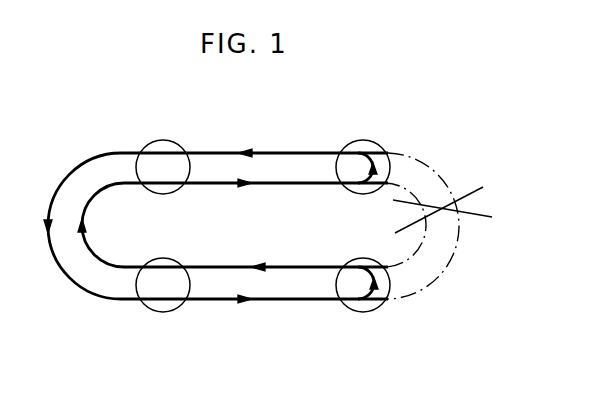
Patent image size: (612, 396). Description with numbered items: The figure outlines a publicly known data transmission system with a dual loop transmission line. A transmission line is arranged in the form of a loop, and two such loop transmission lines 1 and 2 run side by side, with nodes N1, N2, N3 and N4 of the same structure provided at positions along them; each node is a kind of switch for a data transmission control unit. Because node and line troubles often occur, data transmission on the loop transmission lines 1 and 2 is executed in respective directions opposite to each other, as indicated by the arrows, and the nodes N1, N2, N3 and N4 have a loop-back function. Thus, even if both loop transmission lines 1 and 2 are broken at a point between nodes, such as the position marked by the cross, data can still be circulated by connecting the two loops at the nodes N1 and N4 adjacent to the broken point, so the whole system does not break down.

The loop transmission line 1 is at (443, 268).
The loop transmission line 2 is at (428, 233).
The node N1 is at (369, 140).
The node N2 is at (170, 140).
The node N3 is at (170, 312).
The node N4 is at (371, 312).